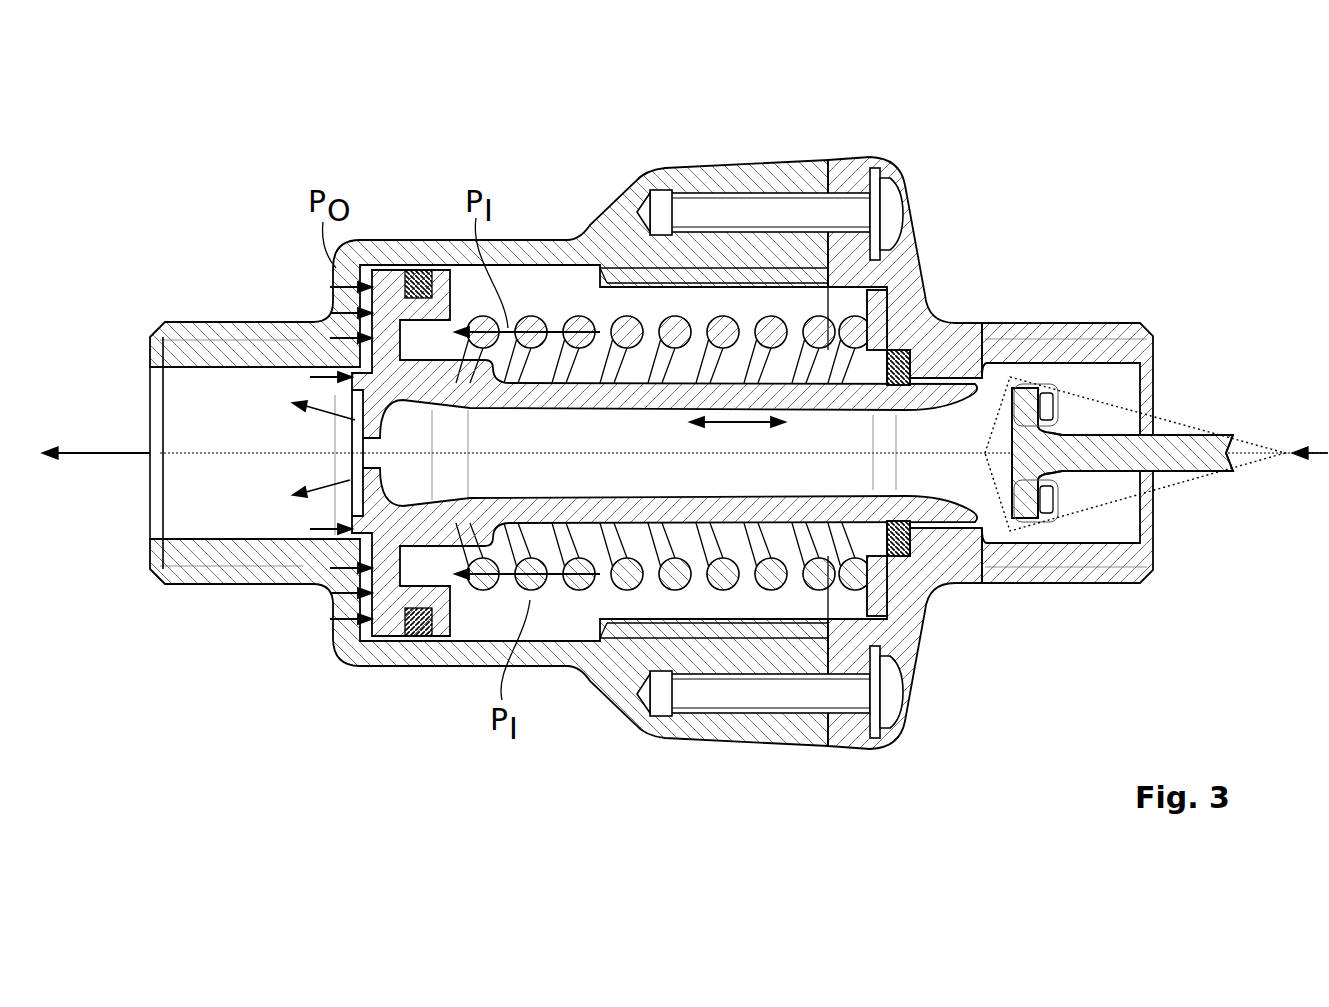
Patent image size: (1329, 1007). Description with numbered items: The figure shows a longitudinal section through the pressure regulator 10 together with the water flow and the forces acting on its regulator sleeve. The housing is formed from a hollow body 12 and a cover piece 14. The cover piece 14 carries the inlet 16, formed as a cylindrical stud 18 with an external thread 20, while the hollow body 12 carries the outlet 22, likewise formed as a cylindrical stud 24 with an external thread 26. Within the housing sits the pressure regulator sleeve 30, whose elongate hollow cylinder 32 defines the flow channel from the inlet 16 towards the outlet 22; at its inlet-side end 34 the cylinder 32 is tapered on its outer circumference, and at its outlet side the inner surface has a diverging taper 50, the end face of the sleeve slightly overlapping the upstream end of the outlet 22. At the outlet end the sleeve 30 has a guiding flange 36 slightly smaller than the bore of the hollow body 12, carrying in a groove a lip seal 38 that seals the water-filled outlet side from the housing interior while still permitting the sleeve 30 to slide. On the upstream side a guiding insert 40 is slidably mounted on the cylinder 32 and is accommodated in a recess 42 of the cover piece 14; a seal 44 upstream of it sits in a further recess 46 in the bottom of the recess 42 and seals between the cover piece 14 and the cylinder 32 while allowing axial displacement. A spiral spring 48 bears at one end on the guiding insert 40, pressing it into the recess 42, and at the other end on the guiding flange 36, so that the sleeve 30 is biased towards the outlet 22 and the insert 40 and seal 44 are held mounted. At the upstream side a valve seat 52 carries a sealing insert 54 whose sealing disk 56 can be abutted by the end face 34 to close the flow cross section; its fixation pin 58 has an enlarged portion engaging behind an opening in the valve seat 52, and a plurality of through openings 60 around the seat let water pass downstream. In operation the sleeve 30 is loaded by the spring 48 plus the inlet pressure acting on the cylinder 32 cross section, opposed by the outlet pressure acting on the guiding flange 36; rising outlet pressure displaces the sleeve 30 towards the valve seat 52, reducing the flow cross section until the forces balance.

The pressure regulator 10 is at (1048, 159).
The hollow body 12 is at (463, 650).
The cover piece 14 is at (855, 745).
The inlet 16 is at (1117, 404).
The cylindrical stud 18 is at (1073, 553).
The external thread 20 is at (1003, 577).
The outlet 22 is at (186, 489).
The cylindrical stud 24 is at (217, 553).
The external thread 26 is at (255, 575).
The pressure regulator sleeve 30 is at (432, 600).
The hollow cylinder 32 is at (625, 400).
The end of cylinder 34 is at (970, 393).
The guiding flange 36 is at (380, 293).
The seal 38 is at (425, 272).
The guiding insert 40 is at (887, 263).
The recess 42 is at (913, 647).
The seal 44 is at (897, 557).
The recess 46 is at (876, 326).
The spring 48 is at (530, 320).
The diverging taper 50 is at (385, 437).
The valve seat 52 is at (1047, 400).
The sealing insert 54 is at (1085, 500).
The sealing disk 56 is at (1023, 500).
The fixation pin 58 is at (1190, 457).
The through openings 60 is at (1007, 377).